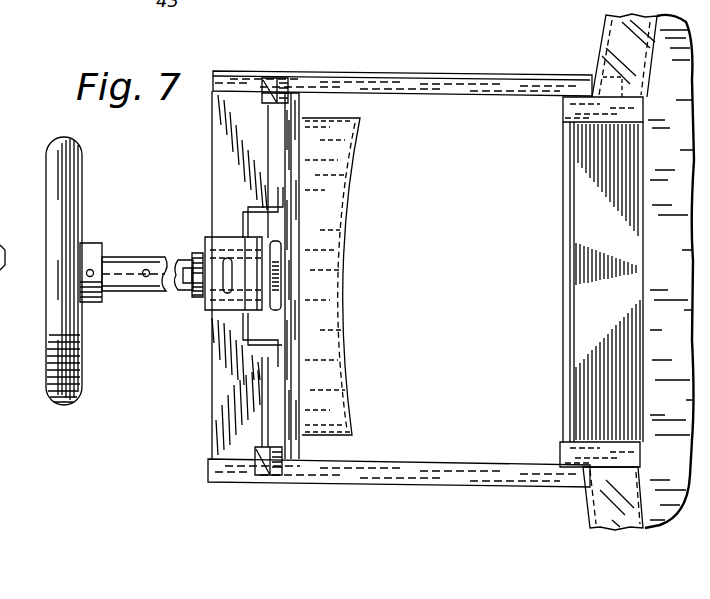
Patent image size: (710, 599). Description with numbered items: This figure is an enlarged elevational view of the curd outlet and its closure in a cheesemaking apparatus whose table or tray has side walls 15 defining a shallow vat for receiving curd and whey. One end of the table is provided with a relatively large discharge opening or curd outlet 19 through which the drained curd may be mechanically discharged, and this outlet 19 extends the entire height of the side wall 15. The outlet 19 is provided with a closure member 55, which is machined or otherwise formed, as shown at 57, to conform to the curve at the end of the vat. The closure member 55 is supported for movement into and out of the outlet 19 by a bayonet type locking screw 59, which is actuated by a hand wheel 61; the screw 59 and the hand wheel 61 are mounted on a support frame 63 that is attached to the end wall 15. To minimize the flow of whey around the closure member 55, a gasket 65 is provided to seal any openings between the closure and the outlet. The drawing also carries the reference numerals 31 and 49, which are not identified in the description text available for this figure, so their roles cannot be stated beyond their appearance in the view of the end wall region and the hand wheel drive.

The side wall 15 is at (655, 65).
The curd outlet 19 is at (625, 132).
The frame band 31 is at (682, 261).
The drive element 49 is at (12, 284).
The closure member 55 is at (332, 170).
The machined portion of the closure member 57 is at (352, 188).
The bayonet type locking screw 59 is at (197, 298).
The hand wheel 61 is at (78, 168).
The support frame 63 is at (476, 88).
The gasket 65 is at (300, 100).